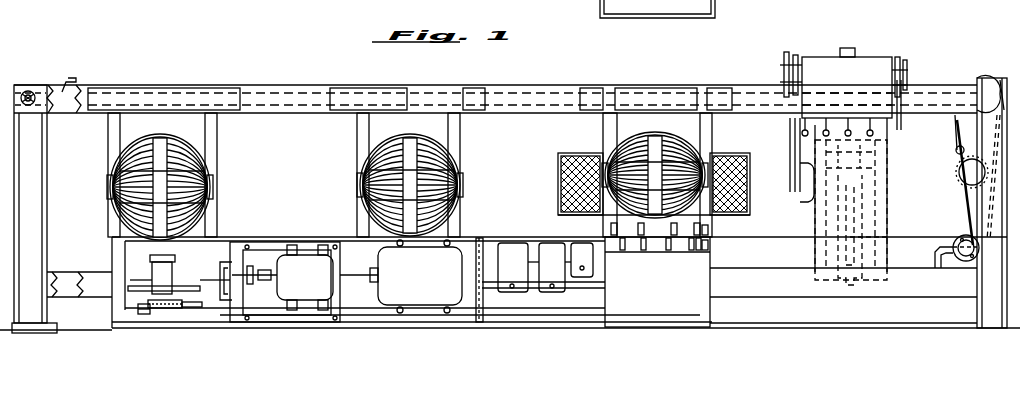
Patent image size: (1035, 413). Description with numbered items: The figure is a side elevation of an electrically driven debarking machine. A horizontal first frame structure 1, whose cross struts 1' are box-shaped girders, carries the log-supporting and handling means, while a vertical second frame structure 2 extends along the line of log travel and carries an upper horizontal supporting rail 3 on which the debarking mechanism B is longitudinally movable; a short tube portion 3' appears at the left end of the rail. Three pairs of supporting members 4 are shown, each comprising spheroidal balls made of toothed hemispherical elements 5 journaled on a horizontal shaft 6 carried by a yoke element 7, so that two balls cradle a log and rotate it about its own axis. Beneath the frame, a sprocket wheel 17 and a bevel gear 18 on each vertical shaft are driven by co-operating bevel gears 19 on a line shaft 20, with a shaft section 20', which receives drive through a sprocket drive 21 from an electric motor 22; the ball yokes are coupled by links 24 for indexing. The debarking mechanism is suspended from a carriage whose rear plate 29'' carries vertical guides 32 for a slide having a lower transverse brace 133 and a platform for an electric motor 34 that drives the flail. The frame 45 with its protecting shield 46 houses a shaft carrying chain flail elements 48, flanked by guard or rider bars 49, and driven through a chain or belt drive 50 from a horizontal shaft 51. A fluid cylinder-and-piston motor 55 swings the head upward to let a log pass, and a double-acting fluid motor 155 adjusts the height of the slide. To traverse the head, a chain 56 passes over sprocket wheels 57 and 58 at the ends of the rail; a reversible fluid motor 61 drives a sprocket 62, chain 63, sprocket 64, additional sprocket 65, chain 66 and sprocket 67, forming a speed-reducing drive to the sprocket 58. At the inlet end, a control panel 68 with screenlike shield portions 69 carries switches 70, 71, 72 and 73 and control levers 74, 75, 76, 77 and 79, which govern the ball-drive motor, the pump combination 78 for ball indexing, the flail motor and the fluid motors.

The first frame structure 1 is at (547, 282).
The cross struts 1' is at (111, 276).
The second frame structure 2 is at (1008, 195).
The upper horizontal supporting rail 3 is at (495, 85).
The tube extension 3' is at (76, 75).
The supporting members 4 is at (192, 152).
The hemispherical elements 5 is at (160, 146).
The shaft 6 is at (210, 186).
The yoke element 7 is at (212, 224).
The sprocket wheel 17 is at (172, 291).
The bevel gear 18 is at (170, 310).
The co-operating bevel gears 19 is at (142, 315).
The line shaft 20 is at (460, 335).
The shaft section 20' is at (187, 315).
The sprocket drive 21 is at (483, 245).
The electric motor 22 is at (430, 280).
The links 24 is at (202, 280).
The rear plate 29'' is at (879, 230).
The vertical guides 32 is at (882, 164).
The electric motor 34 is at (803, 202).
The frame 45 is at (905, 80).
The protecting shield 46 is at (865, 83).
The chain flail elements 48 is at (800, 138).
The guard or rider bars 49 is at (901, 120).
The chain or belt drive 50 is at (783, 72).
The horizontal shaft 51 is at (790, 162).
The fluid cylinder-and-piston motor 55 is at (889, 147).
The chain 56 is at (160, 90).
The sprocket wheel 57 is at (28, 90).
The sprocket wheel 58 is at (1003, 76).
The reversible fluid motor 61 is at (975, 258).
The sprocket 62 is at (980, 247).
The chain 63 is at (963, 198).
The sprocket 64 is at (957, 173).
The additional sprocket 65 is at (949, 150).
The chain 66 is at (958, 130).
The sprocket 67 is at (984, 80).
The control panel 68 is at (718, 5).
The screenlike shield portions 69 is at (736, 154).
The switch 70 is at (610, 229).
The switch 71 is at (638, 229).
The switch 72 is at (685, 228).
The switch 73 is at (708, 238).
The control lever 74 is at (622, 251).
The control lever 75 is at (643, 251).
The control lever 76 is at (668, 251).
The control lever 77 is at (693, 251).
The pump combination 78 is at (310, 284).
The control lever 79 is at (710, 252).
The lower transverse brace 133 is at (877, 172).
The double-acting fluid motor 155 is at (887, 238).
The debarking mechanism B is at (877, 58).